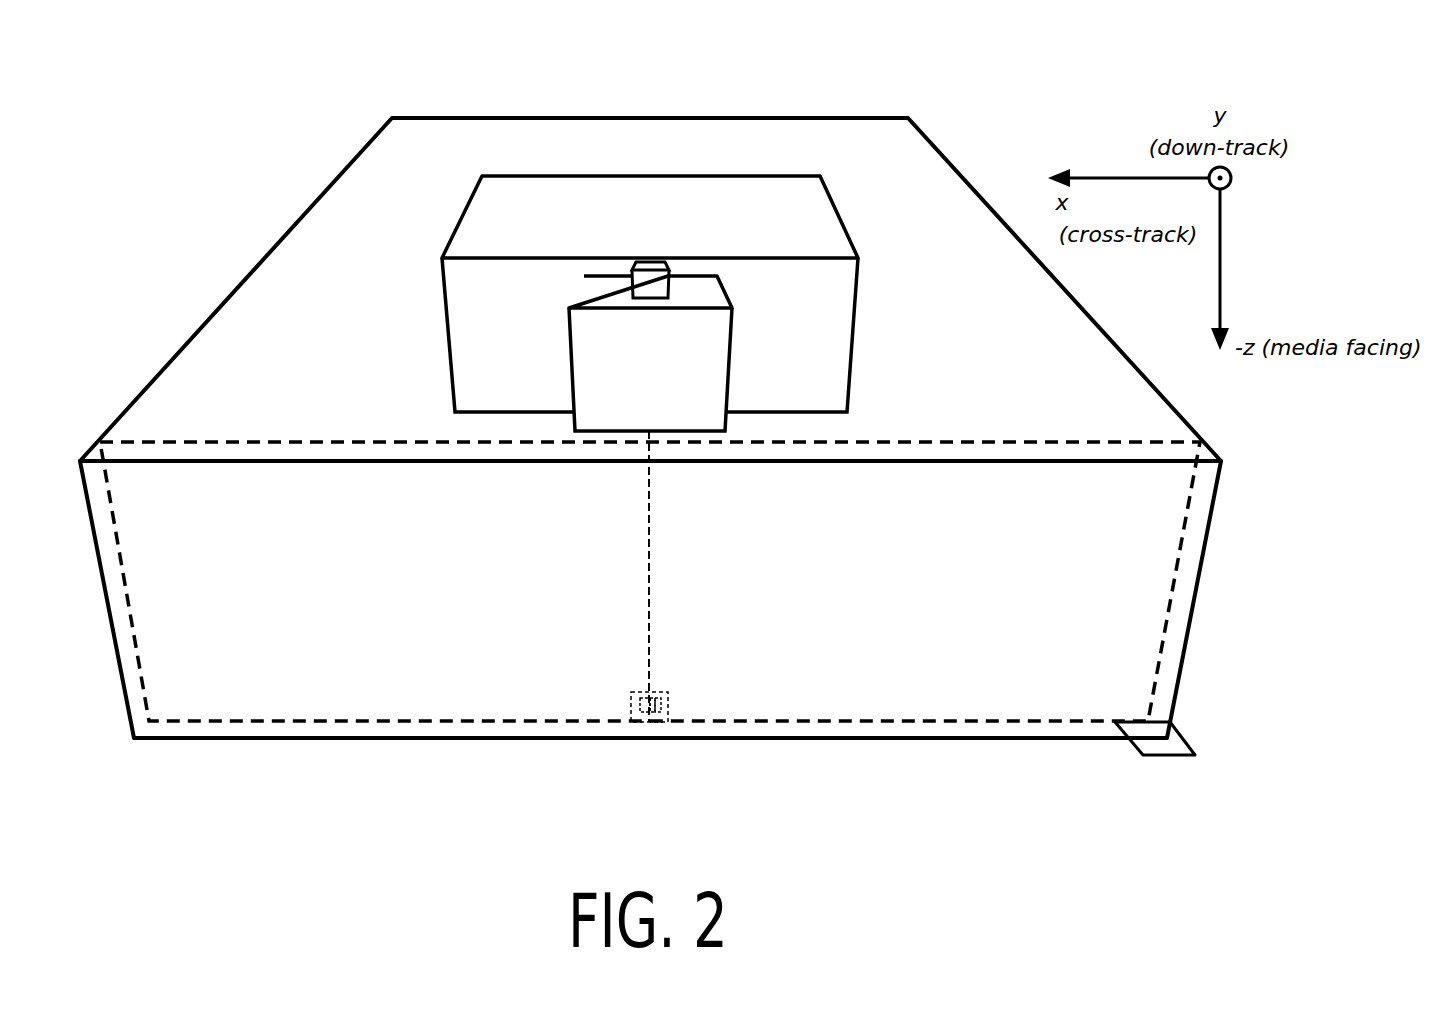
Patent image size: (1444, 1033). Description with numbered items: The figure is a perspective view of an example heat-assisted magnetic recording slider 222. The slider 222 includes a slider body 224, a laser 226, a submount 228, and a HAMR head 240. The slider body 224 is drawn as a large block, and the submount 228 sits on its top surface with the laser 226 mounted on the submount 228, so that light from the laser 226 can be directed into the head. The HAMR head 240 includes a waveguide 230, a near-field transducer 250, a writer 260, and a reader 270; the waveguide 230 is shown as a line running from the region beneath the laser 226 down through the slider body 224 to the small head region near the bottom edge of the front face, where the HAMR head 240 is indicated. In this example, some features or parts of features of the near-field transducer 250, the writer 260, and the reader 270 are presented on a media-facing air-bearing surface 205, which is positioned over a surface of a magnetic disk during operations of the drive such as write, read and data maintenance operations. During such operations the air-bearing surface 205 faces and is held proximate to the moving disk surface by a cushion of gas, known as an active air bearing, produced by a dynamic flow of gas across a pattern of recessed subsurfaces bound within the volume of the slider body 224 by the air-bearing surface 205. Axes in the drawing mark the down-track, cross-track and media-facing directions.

The slider 222 is at (246, 146).
The slider body 224 is at (904, 175).
The submount 228 is at (465, 337).
The laser 226 is at (712, 377).
The waveguide 230 is at (649, 607).
The HAMR head 240 is at (664, 733).
The near-field transducer 250 is at (652, 713).
The writer 260 is at (660, 705).
The reader 270 is at (643, 703).
The air-bearing surface 205 is at (1173, 748).